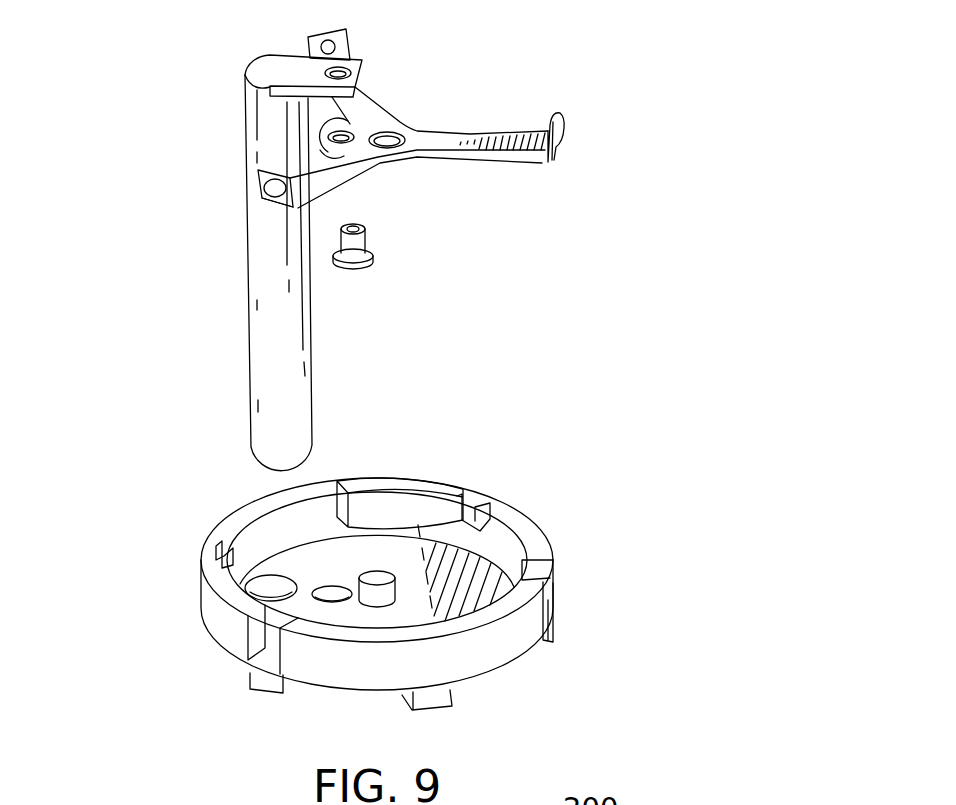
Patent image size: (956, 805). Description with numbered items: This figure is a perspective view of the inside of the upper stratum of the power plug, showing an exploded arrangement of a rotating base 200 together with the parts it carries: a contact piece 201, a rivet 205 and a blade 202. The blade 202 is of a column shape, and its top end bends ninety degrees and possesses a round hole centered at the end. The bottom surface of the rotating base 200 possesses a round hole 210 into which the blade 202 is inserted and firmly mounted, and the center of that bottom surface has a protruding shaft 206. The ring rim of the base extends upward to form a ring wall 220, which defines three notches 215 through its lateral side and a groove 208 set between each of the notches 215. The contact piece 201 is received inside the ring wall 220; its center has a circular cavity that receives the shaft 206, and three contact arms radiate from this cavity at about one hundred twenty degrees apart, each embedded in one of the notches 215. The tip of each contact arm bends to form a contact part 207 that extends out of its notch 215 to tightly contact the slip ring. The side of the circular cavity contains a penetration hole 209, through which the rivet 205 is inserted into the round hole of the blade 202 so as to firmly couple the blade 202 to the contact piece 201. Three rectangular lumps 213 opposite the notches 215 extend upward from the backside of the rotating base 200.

The rotating base 200 is at (490, 462).
The contact piece 201 is at (415, 138).
The blade 202 is at (268, 303).
The rivet 205 is at (372, 244).
The shaft 206 is at (373, 583).
The contact part 207 is at (273, 182).
The groove 208 is at (487, 493).
The penetration hole 209 is at (328, 132).
The round hole 210 is at (248, 580).
The rectangular lump 213 is at (433, 700).
The notch 215 is at (322, 507).
The ring wall 220 is at (520, 610).